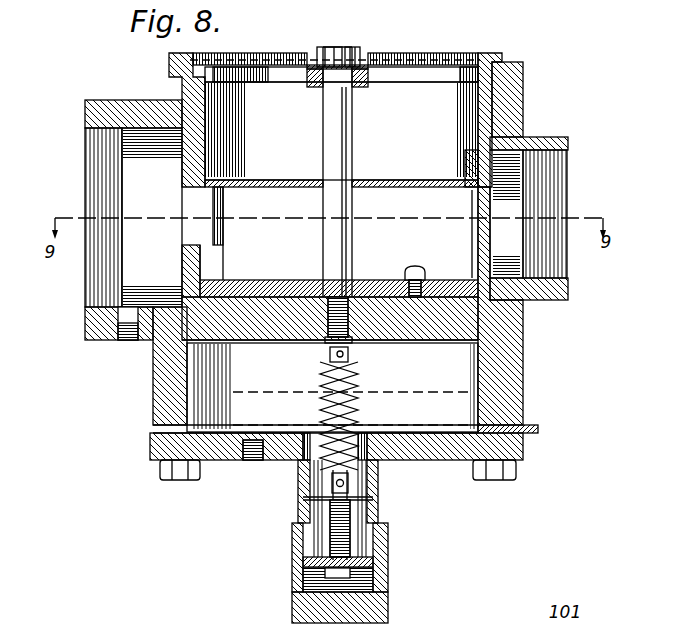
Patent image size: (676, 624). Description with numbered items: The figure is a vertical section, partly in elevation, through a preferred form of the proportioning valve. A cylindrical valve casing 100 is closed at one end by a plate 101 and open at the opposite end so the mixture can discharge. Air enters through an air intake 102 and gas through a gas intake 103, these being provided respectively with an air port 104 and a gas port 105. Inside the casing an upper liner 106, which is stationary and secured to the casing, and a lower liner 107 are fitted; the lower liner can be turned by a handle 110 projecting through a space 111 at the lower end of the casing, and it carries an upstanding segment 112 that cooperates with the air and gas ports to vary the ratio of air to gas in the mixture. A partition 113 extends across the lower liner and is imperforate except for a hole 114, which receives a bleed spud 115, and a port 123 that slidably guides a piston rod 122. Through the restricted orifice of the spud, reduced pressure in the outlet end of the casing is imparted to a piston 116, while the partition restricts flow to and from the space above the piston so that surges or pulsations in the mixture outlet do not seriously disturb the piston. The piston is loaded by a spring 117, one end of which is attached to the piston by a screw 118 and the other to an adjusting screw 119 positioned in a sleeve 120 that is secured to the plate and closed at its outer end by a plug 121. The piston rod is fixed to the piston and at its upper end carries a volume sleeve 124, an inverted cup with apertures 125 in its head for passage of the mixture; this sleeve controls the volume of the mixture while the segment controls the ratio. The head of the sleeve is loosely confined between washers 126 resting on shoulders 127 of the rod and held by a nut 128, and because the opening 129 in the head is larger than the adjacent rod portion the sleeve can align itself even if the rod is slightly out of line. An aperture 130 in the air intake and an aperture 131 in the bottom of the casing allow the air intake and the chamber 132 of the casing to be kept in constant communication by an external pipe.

The cylindrical valve casing 100 is at (524, 366).
The plate 101 is at (524, 459).
The air intake 102 is at (112, 105).
The gas intake 103 is at (558, 138).
The air port 104 is at (144, 175).
The gas port 105 is at (511, 205).
The upper liner 106 is at (493, 117).
The lower liner 107 is at (488, 353).
The handle 110 is at (540, 429).
The space 111 is at (508, 427).
The upstanding segment 112 is at (238, 205).
The partition 113 is at (272, 281).
The hole 114 is at (428, 290).
The bleed spud 115 is at (414, 267).
The piston 116 is at (422, 329).
The spring 117 is at (360, 410).
The screw 118 is at (327, 341).
The adjusting screw 119 is at (346, 520).
The sleeve 120 is at (389, 543).
The plug 121 is at (301, 598).
The piston rod 122 is at (344, 172).
The port 123 is at (362, 292).
The volume sleeve 124 is at (481, 88).
The apertures 125 is at (238, 72).
The washers 126 is at (362, 73).
The shoulders 127 is at (334, 62).
The nut 128 is at (357, 53).
The opening 129 is at (364, 89).
The aperture 130 is at (125, 341).
The aperture 131 is at (257, 449).
The chamber 132 is at (285, 413).